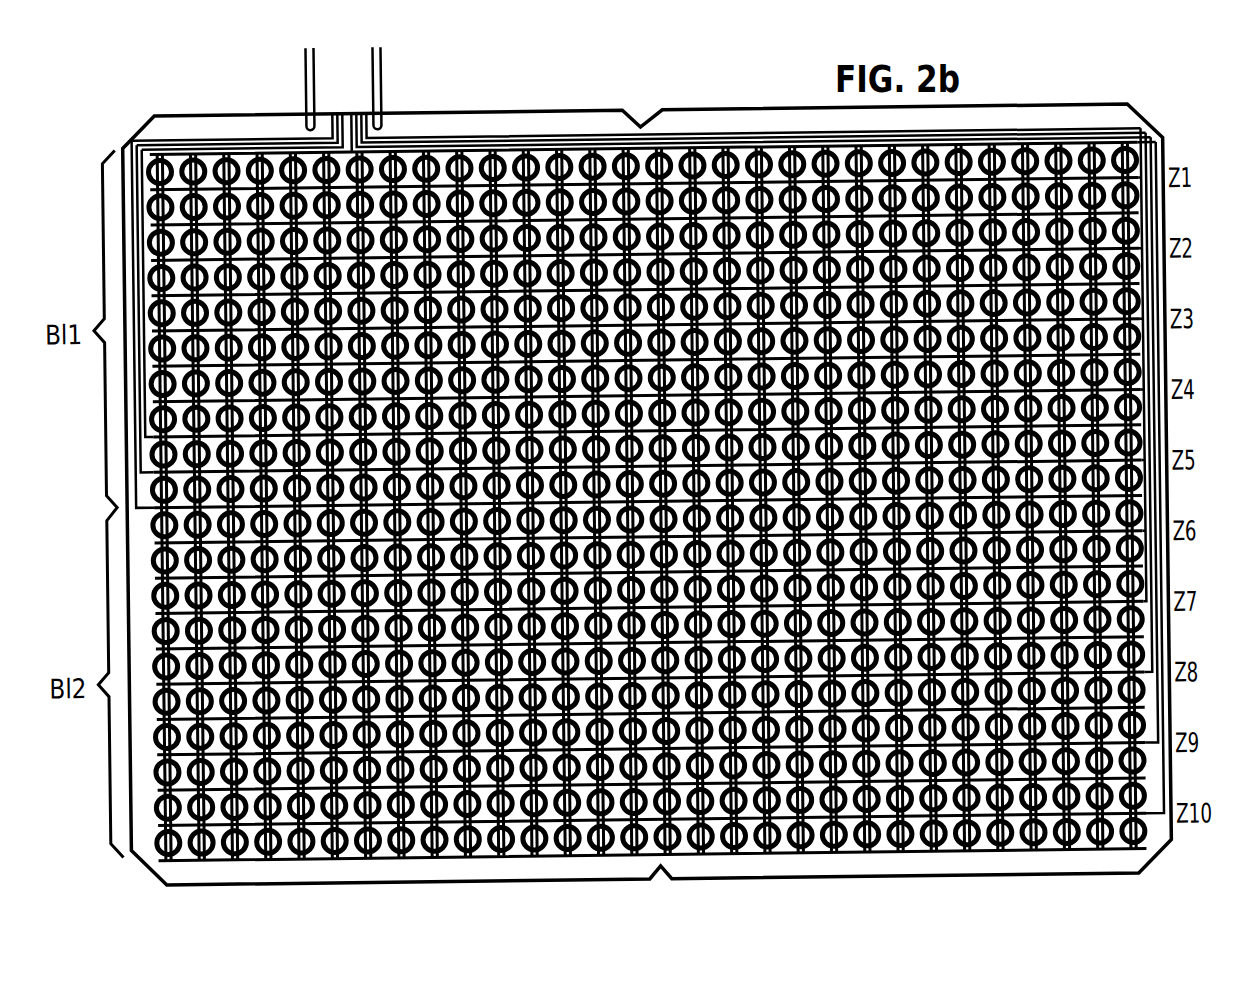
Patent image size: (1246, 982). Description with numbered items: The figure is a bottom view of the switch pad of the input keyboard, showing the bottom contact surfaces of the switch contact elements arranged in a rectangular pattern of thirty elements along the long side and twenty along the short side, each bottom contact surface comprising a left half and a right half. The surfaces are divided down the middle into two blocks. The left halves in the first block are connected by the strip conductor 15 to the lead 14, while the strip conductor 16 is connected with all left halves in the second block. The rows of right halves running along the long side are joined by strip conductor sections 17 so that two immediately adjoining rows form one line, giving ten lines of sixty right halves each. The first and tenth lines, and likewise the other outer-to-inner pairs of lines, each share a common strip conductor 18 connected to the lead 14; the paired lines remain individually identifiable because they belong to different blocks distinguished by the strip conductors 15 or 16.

The lead 14 is at (327, 114).
The strip conductor 15 is at (208, 158).
The strip conductor 16 is at (128, 489).
The strip conductor sections 17 is at (408, 172).
The common strip conductor 18 is at (1167, 718).